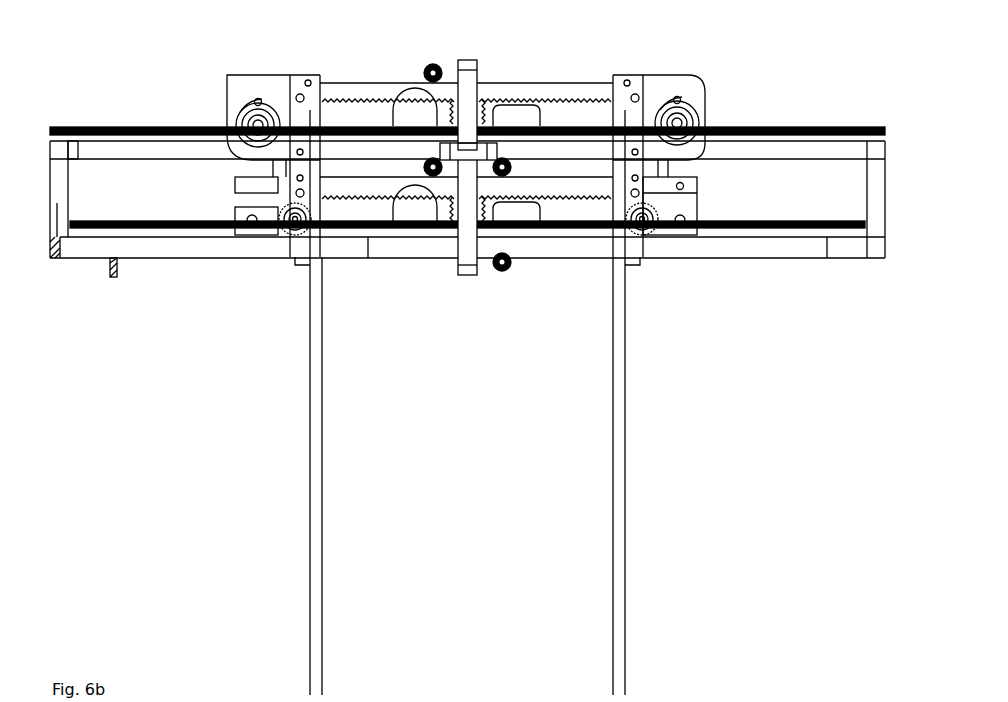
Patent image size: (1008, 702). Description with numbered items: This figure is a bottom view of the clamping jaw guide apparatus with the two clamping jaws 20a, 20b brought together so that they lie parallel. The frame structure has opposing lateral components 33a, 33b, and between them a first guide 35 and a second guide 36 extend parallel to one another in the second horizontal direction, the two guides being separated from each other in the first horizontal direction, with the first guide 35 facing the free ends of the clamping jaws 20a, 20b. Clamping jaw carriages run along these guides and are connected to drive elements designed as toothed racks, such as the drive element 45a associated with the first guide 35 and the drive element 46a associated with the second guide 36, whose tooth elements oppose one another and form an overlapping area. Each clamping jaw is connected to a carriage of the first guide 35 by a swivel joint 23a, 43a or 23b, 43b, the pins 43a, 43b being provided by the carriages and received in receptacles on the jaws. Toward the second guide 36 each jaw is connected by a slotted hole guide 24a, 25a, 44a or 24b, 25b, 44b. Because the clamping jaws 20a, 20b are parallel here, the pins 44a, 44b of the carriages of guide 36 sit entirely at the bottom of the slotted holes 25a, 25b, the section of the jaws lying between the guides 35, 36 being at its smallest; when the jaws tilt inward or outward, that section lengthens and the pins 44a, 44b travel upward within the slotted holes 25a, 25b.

The clamping jaw 20a is at (620, 505).
The clamping jaw 20b is at (315, 505).
The swivel joint 23a is at (680, 210).
The swivel joint 23b is at (235, 206).
The slotted hole guide 24a is at (655, 90).
The slotted hole guide 24b is at (283, 86).
The slotted hole 25a is at (700, 108).
The slotted hole 25b is at (230, 105).
The lateral component 33a is at (880, 178).
The lateral component 33b is at (62, 175).
The first guide 35 is at (752, 228).
The second guide 36 is at (788, 142).
The pin of swivel joint 43a is at (642, 228).
The pin of swivel joint 43b is at (292, 232).
The pin of slotted hole guide 44a is at (680, 99).
The pin of slotted hole guide 44b is at (256, 101).
The drive element 45a is at (573, 192).
The drive element 46a is at (560, 92).